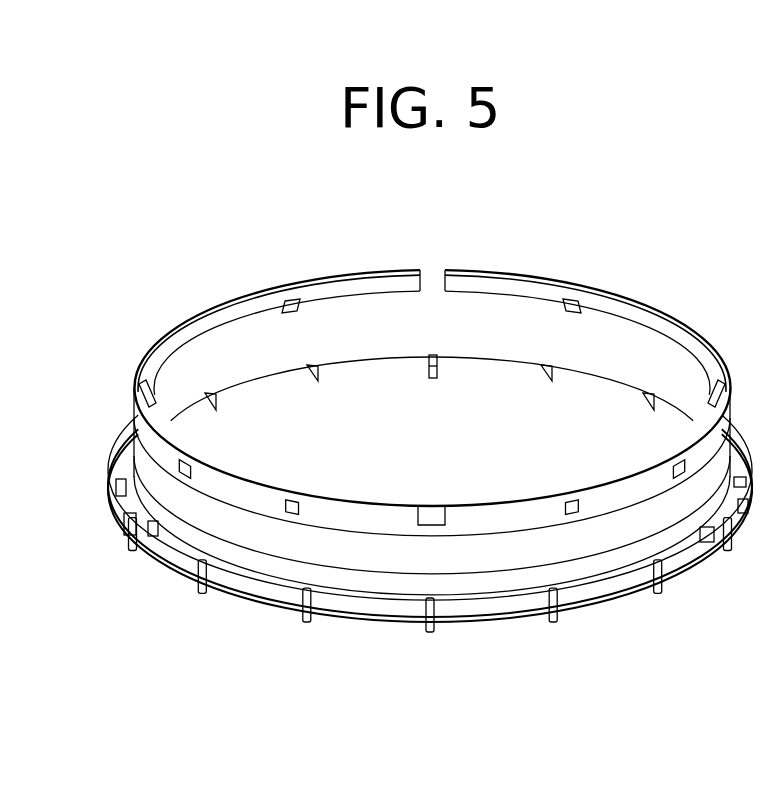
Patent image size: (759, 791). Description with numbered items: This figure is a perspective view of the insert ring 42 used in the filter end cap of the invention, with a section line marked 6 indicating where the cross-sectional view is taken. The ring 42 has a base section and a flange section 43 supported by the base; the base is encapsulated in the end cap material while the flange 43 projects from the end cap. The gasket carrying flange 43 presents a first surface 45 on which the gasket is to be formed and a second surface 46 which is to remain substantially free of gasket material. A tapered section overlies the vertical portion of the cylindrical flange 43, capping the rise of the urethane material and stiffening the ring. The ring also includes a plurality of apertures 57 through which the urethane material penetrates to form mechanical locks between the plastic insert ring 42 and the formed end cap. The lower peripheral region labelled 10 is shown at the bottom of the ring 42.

The insert ring 42 is at (252, 265).
The apertures 57 is at (228, 306).
The first surface 45 is at (623, 340).
The flange section 43 is at (672, 340).
The section line 6- 6 is at (447, 421).
The second surface 46 is at (300, 547).
The flange 10 is at (628, 590).